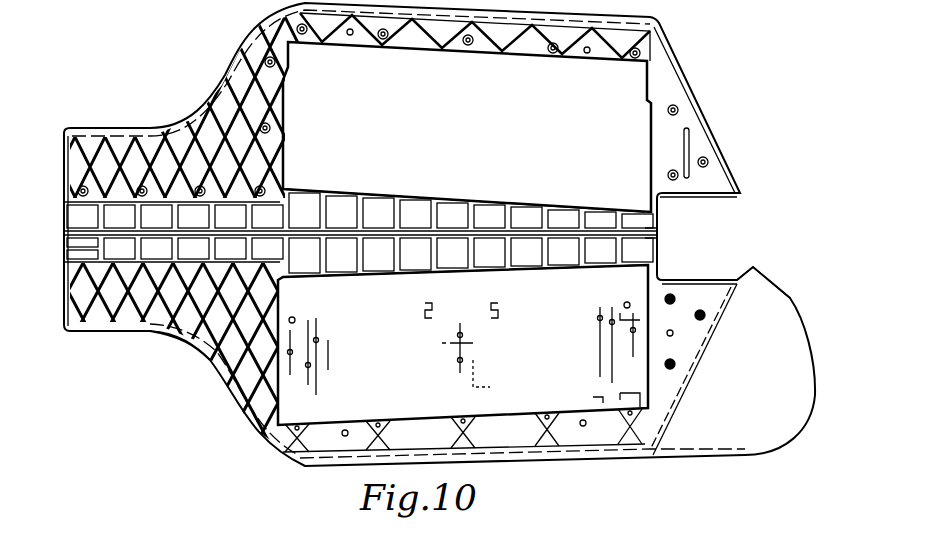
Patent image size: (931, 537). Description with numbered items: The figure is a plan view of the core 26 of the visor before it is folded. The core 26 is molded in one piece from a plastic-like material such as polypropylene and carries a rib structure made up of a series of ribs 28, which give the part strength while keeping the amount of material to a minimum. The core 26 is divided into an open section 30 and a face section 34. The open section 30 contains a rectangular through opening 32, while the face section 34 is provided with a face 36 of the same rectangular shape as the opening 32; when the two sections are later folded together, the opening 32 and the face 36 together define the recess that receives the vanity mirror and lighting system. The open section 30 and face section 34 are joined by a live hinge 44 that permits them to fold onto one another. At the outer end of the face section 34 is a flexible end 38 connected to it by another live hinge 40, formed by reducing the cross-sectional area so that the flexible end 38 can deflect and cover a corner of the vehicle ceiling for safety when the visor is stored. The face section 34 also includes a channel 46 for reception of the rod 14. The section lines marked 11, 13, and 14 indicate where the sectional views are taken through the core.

The open section 30 is at (224, 78).
The rectangular shaped through opening 32 is at (367, 47).
The live hinge 44 is at (62, 231).
The ribs 28 is at (172, 310).
The core 26 is at (267, 457).
The face 36 is at (363, 423).
The face section 34 is at (535, 465).
The flexible end 38 is at (720, 456).
The live hinge 40 is at (737, 266).
The channel 46 is at (658, 250).
The rod 14 is at (615, 250).
The section line 11- 11 is at (15, 11).
The section line 13- 13 is at (832, 30).